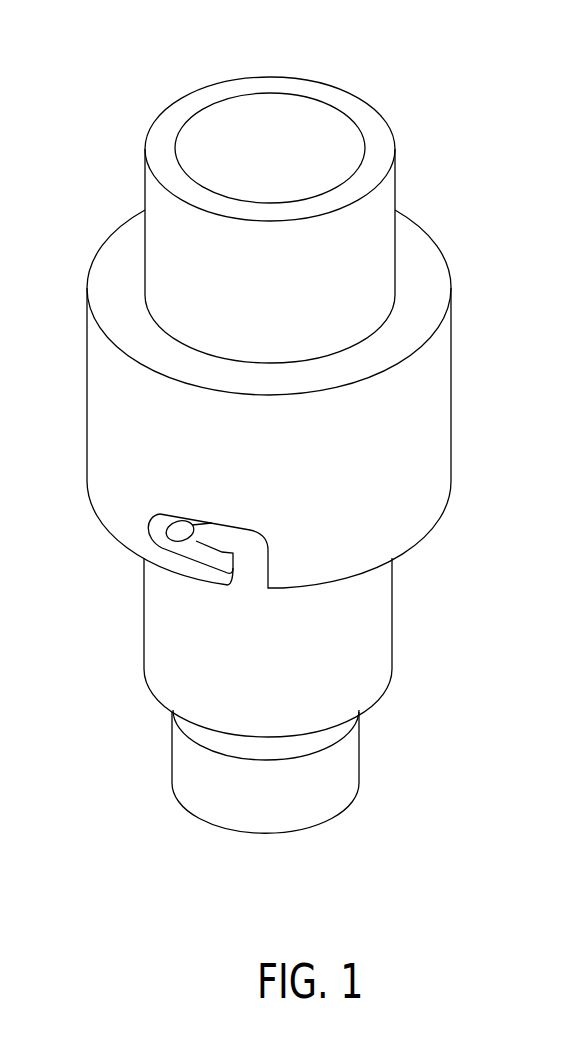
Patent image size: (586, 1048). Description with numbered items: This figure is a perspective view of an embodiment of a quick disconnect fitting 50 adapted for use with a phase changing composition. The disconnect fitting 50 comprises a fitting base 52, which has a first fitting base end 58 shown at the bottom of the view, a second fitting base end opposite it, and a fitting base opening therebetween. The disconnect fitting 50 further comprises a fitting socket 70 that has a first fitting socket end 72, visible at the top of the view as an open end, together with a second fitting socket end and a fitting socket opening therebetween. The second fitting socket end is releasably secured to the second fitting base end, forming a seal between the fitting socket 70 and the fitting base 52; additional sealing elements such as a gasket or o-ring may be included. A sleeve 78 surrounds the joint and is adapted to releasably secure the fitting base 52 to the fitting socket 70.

The disconnect fitting 50 is at (84, 115).
The fitting base 52 is at (413, 619).
The first fitting base end 58 is at (300, 832).
The fitting socket 70 is at (314, 193).
The first fitting socket end 72 is at (273, 79).
The sleeve 78 is at (466, 397).